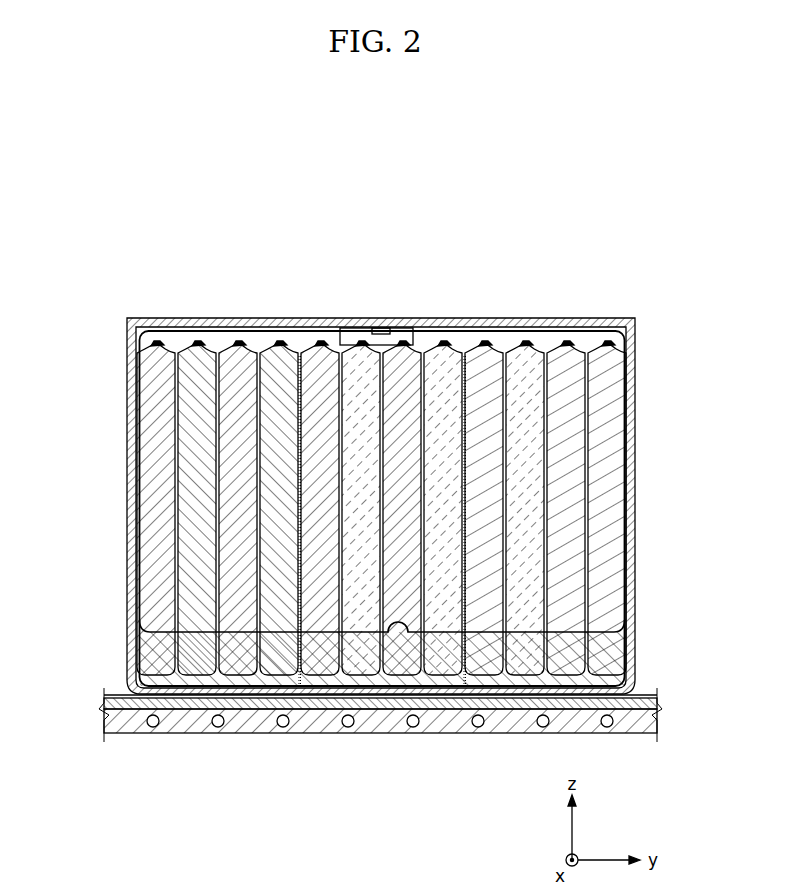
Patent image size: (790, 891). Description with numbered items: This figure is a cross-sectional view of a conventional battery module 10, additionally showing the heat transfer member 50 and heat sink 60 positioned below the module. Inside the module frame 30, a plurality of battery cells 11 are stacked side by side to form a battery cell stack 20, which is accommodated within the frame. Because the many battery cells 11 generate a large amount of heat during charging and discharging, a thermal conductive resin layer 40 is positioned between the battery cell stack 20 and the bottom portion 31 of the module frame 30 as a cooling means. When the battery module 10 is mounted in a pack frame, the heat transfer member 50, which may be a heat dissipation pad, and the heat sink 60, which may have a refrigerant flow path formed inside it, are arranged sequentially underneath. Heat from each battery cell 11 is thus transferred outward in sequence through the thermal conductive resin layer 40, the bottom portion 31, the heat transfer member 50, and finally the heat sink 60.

The battery module 10 is at (367, 259).
The battery cell 11 is at (612, 533).
The battery cell stack 20 is at (398, 636).
The module frame 30 is at (127, 366).
The bottom portion 31 is at (152, 672).
The thermal conductive resin layer 40 is at (190, 690).
The heat transfer member 50 is at (255, 702).
The heat sink 60 is at (316, 712).